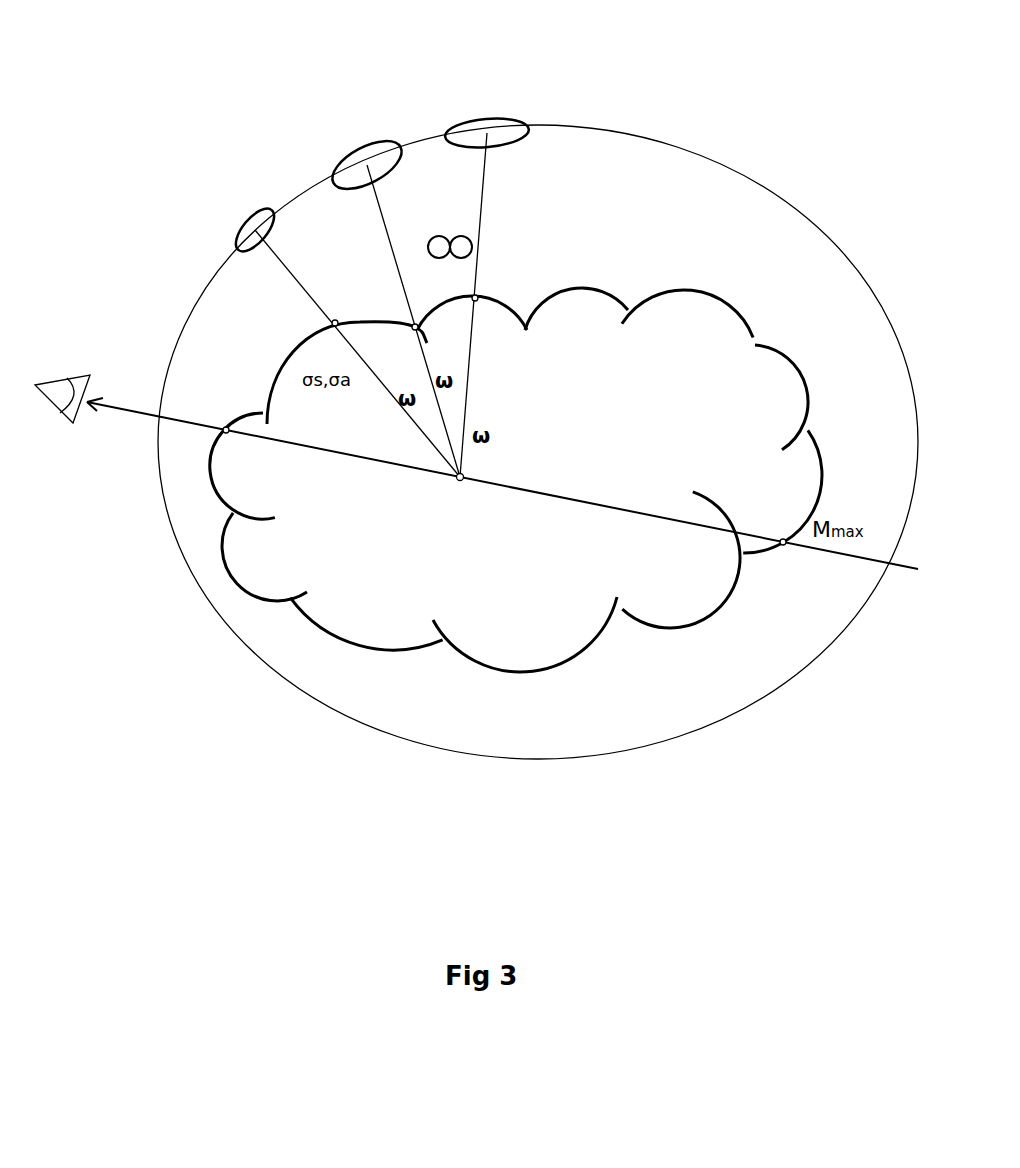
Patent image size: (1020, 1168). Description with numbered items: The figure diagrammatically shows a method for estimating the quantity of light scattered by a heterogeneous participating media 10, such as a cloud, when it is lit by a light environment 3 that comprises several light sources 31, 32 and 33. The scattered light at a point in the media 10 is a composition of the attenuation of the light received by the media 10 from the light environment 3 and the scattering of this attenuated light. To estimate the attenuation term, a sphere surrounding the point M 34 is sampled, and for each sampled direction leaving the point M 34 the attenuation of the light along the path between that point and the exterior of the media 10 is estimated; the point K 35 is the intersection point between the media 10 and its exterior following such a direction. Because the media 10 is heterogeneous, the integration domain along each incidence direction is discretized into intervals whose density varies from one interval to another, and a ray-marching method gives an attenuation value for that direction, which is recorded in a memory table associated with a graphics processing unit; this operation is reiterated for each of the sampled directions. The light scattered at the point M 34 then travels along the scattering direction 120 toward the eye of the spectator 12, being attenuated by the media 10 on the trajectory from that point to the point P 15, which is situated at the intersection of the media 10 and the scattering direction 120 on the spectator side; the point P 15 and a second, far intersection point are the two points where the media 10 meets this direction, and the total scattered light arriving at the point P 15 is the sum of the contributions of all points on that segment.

The light environment 3 is at (777, 197).
The heterogeneous participating media 10 is at (605, 638).
The spectator 12 is at (68, 372).
The scattering direction ωout 120 is at (142, 420).
The point P 15 is at (223, 420).
The light source 31 is at (245, 215).
The light source 32 is at (355, 150).
The light source 33 is at (470, 120).
The point M 34 is at (465, 485).
The intersection point K 35 is at (478, 303).